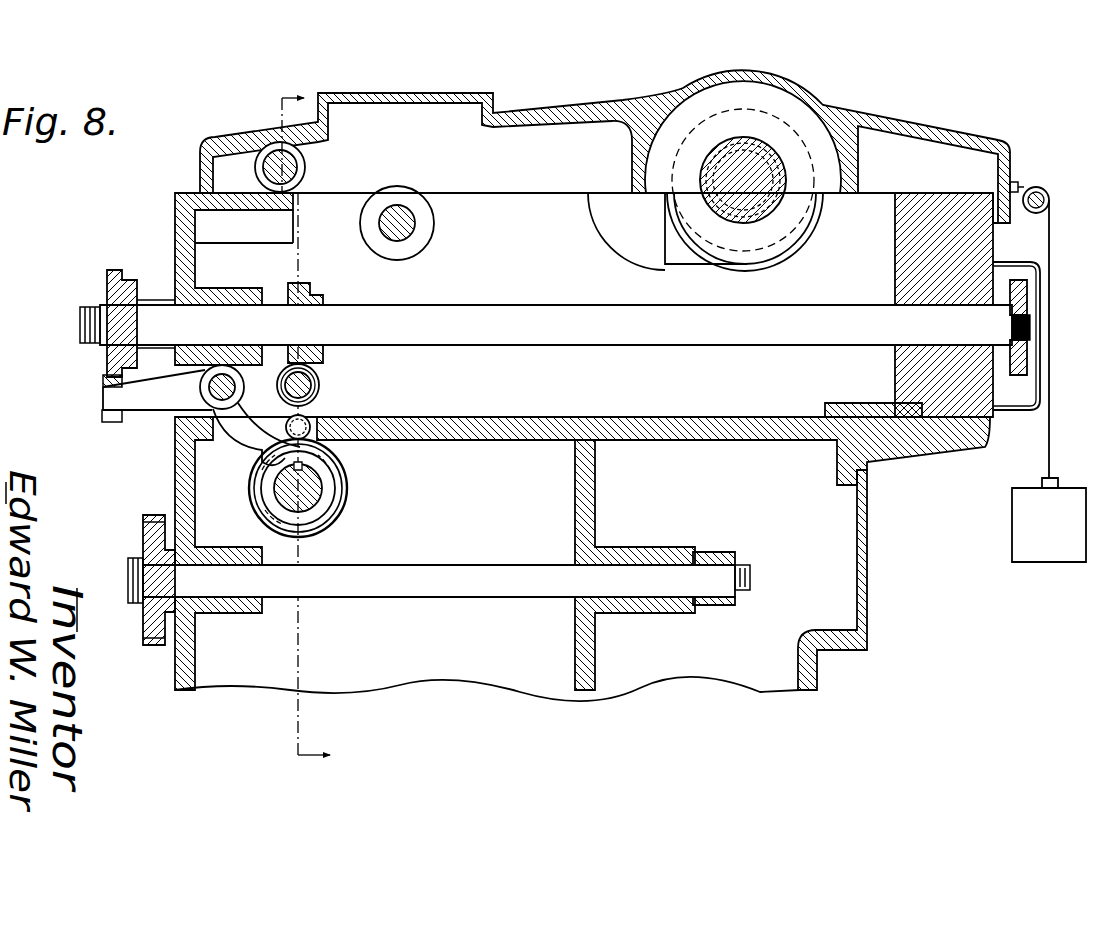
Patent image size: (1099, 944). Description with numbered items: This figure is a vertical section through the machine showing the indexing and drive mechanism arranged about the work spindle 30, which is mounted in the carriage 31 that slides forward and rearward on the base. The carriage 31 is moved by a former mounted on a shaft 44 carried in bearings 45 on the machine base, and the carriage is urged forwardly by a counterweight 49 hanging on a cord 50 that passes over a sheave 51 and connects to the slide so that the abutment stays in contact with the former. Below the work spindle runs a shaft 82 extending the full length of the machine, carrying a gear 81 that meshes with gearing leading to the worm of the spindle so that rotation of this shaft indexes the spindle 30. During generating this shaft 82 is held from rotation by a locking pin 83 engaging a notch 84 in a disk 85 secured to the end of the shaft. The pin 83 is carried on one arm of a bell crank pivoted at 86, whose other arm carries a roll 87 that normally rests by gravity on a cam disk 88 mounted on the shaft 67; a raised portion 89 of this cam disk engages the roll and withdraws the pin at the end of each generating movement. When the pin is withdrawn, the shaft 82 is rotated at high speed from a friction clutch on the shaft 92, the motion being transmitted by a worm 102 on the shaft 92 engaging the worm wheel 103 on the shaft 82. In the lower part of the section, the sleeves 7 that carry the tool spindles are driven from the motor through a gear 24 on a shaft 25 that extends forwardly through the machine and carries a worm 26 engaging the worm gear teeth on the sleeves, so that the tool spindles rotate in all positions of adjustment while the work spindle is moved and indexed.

The sleeve 7 is at (317, 426).
The gear 24 is at (147, 524).
The shaft 25 is at (493, 566).
The worm 26 is at (727, 553).
The work spindle 30 is at (745, 148).
The carriage 31 is at (556, 108).
The shaft 44 is at (416, 220).
The bearing 45 is at (303, 174).
The counterweight 49 is at (1068, 492).
The cord 50 is at (1052, 272).
The sheave 51 is at (1044, 189).
The shaft 67 is at (338, 510).
The gear 81 is at (1017, 370).
The shaft 82 is at (622, 325).
The locking pin 83 is at (114, 384).
The notch 84 is at (100, 374).
The disk 85 is at (114, 270).
The bell crank pivot 86 is at (226, 379).
The roll 87 is at (310, 418).
The cam disk 88 is at (348, 484).
The raised portion 89 is at (256, 453).
The shaft 92 is at (326, 388).
The worm 102 is at (320, 380).
The worm wheel 103 is at (311, 288).